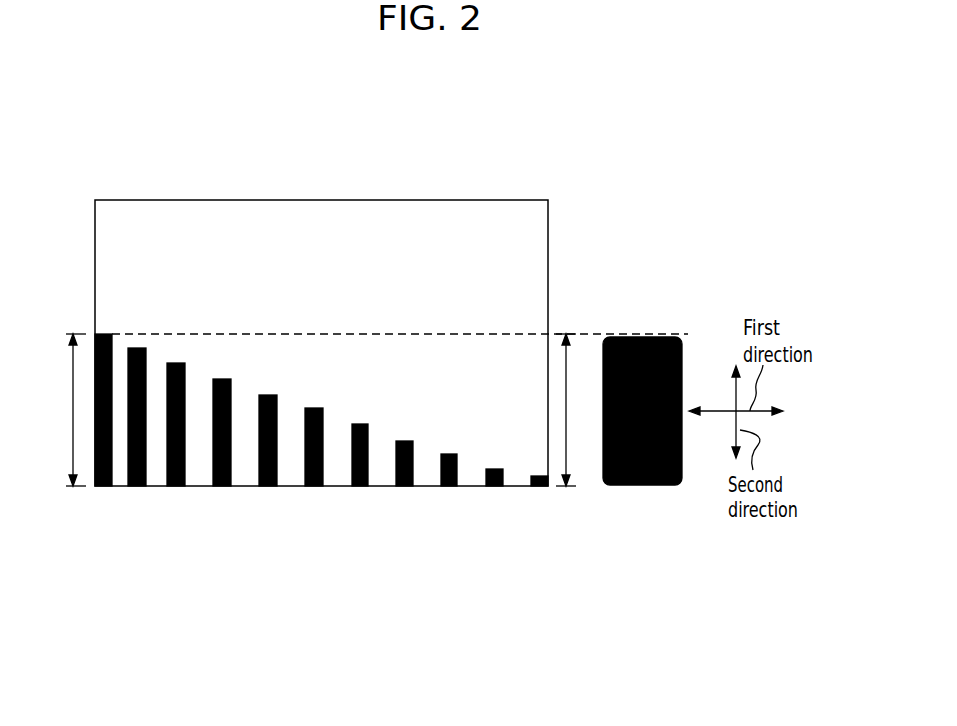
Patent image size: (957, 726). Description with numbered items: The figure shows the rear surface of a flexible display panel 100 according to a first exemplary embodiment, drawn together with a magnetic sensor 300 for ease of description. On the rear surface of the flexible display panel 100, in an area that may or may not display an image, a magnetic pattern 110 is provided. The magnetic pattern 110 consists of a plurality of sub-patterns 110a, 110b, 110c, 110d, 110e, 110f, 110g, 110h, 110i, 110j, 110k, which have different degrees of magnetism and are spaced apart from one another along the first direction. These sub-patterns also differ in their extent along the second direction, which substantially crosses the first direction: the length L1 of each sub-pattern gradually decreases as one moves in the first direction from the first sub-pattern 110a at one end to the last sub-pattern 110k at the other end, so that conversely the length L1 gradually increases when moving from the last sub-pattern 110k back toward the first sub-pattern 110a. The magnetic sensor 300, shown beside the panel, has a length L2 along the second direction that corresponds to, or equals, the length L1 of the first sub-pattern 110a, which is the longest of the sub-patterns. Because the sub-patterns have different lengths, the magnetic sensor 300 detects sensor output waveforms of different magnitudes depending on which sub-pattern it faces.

The flexible display panel 100 is at (432, 126).
The magnetic pattern 110 is at (323, 475).
The first sub-pattern 110a is at (101, 488).
The sub-pattern 110b is at (134, 488).
The sub-pattern 110c is at (174, 488).
The sub-pattern 110d is at (220, 488).
The sub-pattern 110e is at (265, 488).
The sub-pattern 110f is at (311, 488).
The sub-pattern 110g is at (357, 488).
The sub-pattern 110h is at (402, 488).
The sub-pattern 110i is at (447, 488).
The sub-pattern 110j is at (493, 488).
The last sub-pattern 110k is at (542, 520).
The magnetic sensor 300 is at (641, 485).
The length of the sub-patterns L1 is at (64, 410).
The length of the magnetic sensor L2 is at (574, 410).